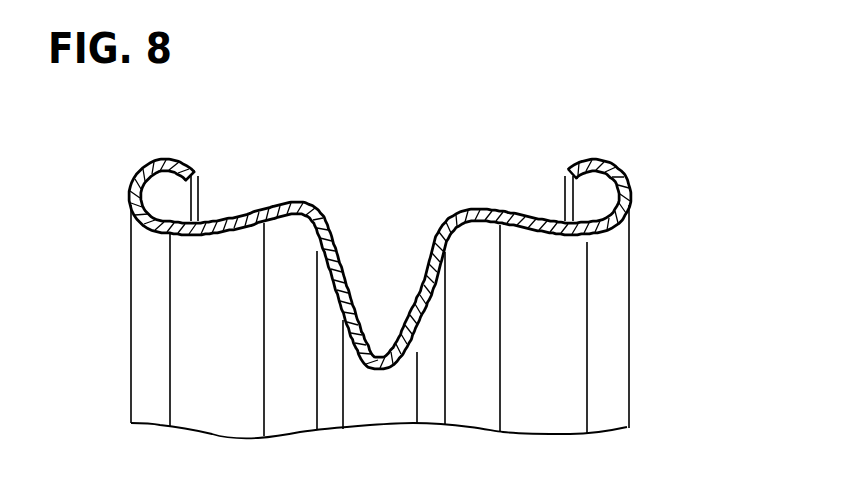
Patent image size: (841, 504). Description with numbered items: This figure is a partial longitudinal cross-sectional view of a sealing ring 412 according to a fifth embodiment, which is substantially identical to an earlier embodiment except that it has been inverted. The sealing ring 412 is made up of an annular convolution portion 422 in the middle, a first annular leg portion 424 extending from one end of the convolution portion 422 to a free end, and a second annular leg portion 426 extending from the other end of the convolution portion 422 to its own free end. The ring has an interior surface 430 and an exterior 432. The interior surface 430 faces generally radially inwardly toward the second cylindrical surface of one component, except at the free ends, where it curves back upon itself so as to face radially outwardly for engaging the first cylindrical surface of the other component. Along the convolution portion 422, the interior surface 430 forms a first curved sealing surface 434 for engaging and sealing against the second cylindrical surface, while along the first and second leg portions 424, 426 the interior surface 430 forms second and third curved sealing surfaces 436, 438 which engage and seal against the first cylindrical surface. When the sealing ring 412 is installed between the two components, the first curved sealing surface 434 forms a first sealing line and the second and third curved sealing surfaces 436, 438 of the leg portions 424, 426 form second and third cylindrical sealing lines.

The sealing ring 412 is at (585, 139).
The annular convolution portion 422 is at (388, 358).
The first annular leg portion 424 is at (324, 317).
The second annular leg portion 426 is at (435, 319).
The interior surface 430 is at (222, 233).
The exterior 432 is at (319, 247).
The first curved sealing surface 434 is at (381, 369).
The second curved sealing surface 436 is at (159, 157).
The third curved sealing surface 438 is at (582, 156).